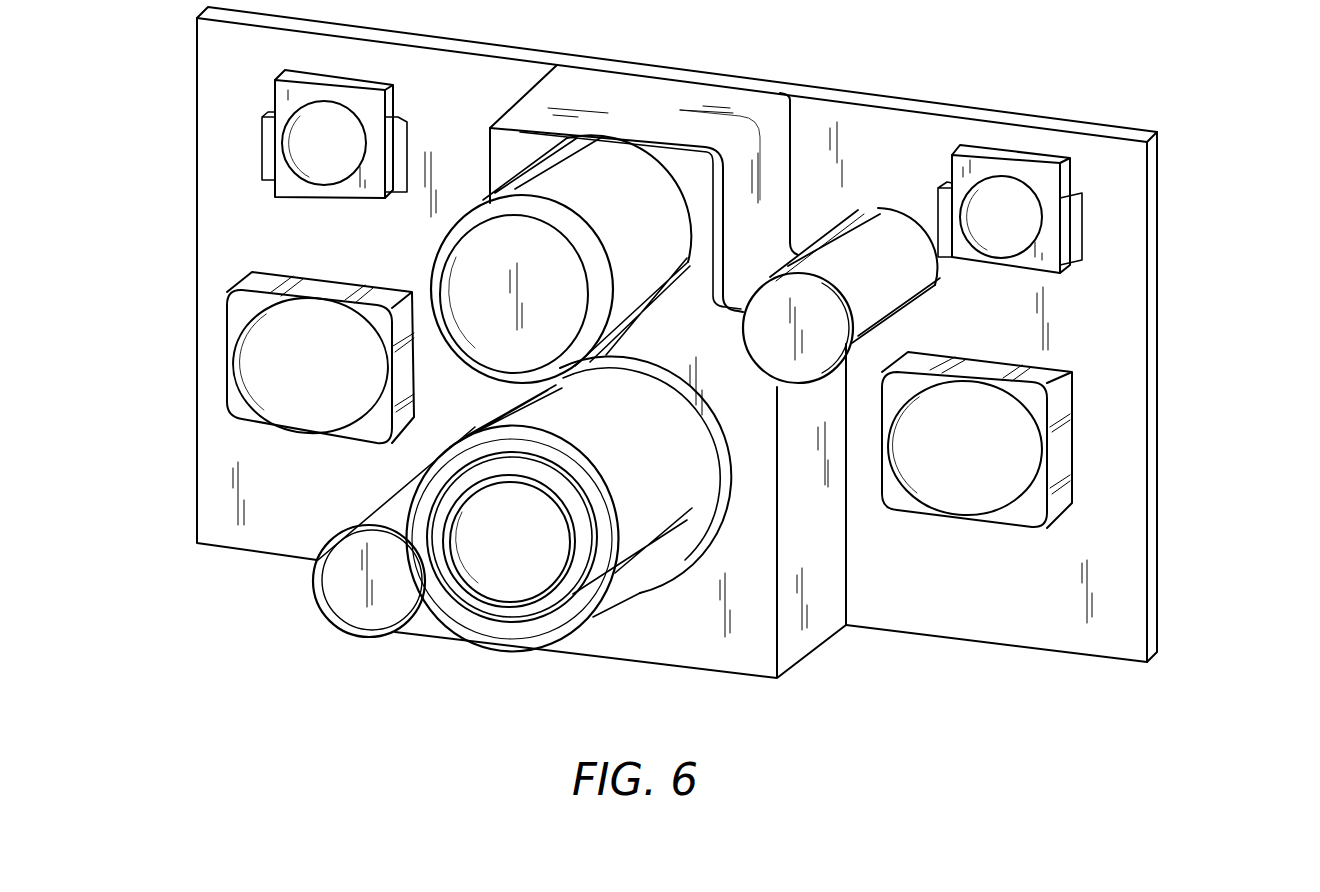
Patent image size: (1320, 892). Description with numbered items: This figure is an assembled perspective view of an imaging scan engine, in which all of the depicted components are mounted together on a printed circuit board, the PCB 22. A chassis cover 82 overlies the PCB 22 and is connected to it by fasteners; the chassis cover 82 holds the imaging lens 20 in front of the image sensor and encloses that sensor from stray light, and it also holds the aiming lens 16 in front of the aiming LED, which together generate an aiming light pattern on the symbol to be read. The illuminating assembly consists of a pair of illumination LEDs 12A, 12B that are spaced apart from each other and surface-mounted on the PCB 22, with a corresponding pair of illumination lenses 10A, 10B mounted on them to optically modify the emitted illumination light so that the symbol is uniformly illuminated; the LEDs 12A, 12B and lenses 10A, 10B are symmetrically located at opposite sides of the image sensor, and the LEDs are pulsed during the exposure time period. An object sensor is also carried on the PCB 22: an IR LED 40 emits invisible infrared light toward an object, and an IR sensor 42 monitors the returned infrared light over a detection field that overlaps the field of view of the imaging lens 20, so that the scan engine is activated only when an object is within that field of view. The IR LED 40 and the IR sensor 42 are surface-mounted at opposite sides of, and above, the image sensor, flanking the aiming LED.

The PCB 22 is at (687, 69).
The chassis cover 82 is at (740, 679).
The aiming lens 16 is at (467, 254).
The imaging lens 20 is at (537, 525).
The IR LED 40 is at (262, 118).
The IR light sensor 42 is at (1053, 205).
The illumination LED 12B is at (277, 280).
The illumination lens 10B is at (310, 420).
The illumination LED 12A is at (1058, 420).
The illumination lens 10A is at (965, 510).